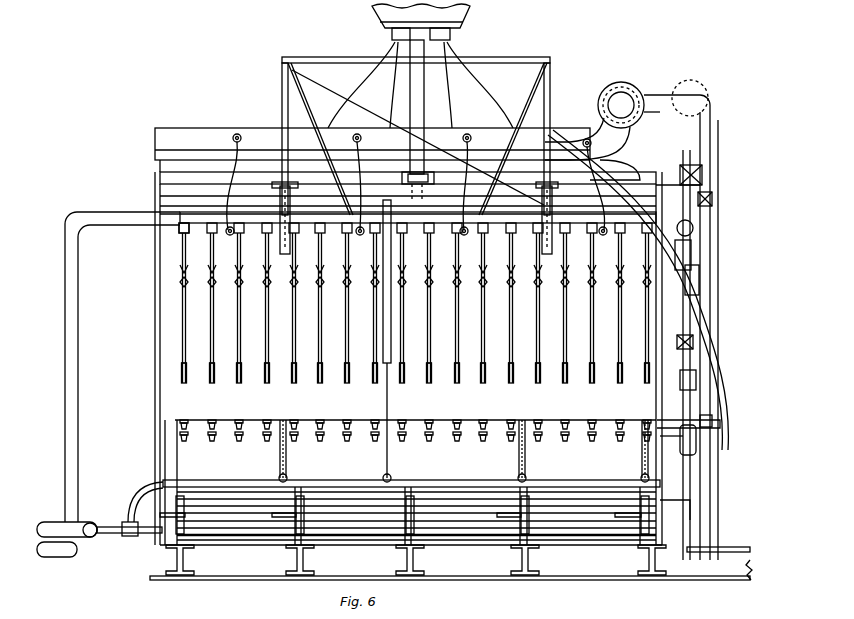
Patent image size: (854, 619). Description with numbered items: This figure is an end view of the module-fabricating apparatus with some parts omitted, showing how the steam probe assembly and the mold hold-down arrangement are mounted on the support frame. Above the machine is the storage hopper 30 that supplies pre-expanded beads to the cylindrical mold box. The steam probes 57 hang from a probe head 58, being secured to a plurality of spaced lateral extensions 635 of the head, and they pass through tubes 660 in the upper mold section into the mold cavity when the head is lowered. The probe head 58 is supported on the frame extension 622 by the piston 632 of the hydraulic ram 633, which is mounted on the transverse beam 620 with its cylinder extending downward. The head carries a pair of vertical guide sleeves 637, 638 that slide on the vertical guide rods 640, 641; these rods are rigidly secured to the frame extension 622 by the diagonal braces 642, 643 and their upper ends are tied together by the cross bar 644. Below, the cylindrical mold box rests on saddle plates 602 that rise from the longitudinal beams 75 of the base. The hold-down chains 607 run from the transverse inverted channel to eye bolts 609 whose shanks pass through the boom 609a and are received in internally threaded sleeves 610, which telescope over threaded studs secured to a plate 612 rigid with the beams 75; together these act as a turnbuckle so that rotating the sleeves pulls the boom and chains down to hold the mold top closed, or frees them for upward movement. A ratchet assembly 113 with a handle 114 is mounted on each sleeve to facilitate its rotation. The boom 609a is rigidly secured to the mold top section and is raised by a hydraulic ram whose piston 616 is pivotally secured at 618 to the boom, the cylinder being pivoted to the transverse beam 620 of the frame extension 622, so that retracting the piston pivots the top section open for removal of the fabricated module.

The storage hopper 30 is at (468, 12).
The steam probes 57 is at (182, 318).
The probe head 58 is at (185, 242).
The longitudinal beams 75 is at (186, 572).
The ratchet assembly 113 is at (400, 512).
The handle 114 is at (390, 518).
The saddle plates 602 is at (307, 535).
The hold-down chains 607 is at (281, 462).
The eye bolts 609 is at (527, 478).
The boom 609a is at (210, 480).
The internally threaded sleeve 610 is at (275, 518).
The plate 612 is at (221, 536).
The piston 616 is at (383, 400).
The pivotal connection 618 is at (383, 474).
The transverse beam 620 is at (443, 190).
The frame extension 622 is at (312, 176).
The piston 632 is at (415, 206).
The hydraulic ram 633 is at (420, 115).
The lateral extensions 635 is at (182, 228).
The vertical guide sleeve 637 is at (280, 194).
The vertical guide sleeve 638 is at (552, 200).
The vertical guide rod 640 is at (284, 83).
The vertical guide rod 641 is at (551, 98).
The diagonal brace 642 is at (305, 90).
The diagonal brace 643 is at (549, 76).
The cross bar 644 is at (497, 60).
The tubes 660 is at (453, 440).